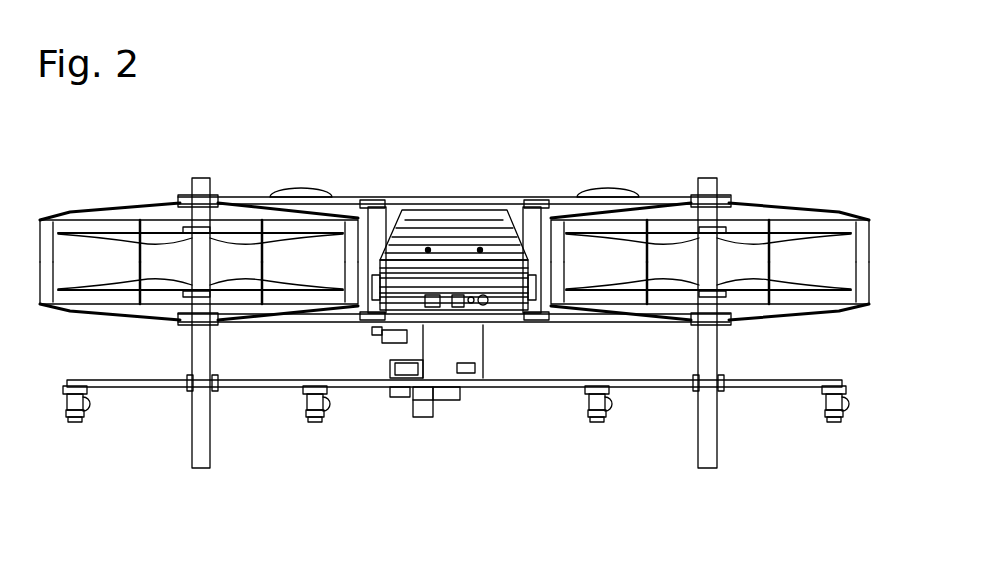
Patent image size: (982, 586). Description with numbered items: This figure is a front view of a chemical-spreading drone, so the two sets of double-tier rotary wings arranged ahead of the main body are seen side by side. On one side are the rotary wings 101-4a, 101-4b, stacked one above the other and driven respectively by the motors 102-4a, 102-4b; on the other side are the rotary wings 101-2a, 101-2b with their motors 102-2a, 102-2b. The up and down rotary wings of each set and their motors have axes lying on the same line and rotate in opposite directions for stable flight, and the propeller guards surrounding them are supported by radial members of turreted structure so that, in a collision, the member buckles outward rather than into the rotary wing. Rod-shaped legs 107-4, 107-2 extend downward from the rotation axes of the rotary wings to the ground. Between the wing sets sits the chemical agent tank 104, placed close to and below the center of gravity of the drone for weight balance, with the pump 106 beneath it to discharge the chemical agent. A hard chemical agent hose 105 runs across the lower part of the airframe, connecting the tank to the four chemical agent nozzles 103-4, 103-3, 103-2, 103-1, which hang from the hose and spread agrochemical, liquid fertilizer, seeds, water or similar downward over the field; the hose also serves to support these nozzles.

The rotary wing 101-4a is at (108, 208).
The rotary wing 101-4b is at (112, 293).
The motor 102-4a is at (230, 220).
The motor 102-4b is at (183, 285).
The rotary wing 101-2a is at (801, 208).
The rotary wing 101-2b is at (797, 293).
The motor 102-2a is at (679, 220).
The motor 102-2b is at (726, 285).
The chemical agent tank 104 is at (487, 325).
The chemical agent hose 105 is at (143, 388).
The pump 106 is at (463, 350).
The chemical agent nozzle 103-4 is at (73, 423).
The chemical agent nozzle 103-3 is at (313, 423).
The chemical agent nozzle 103-2 is at (595, 423).
The chemical agent nozzle 103-1 is at (832, 423).
The leg 107-4 is at (201, 470).
The leg 107-2 is at (707, 470).